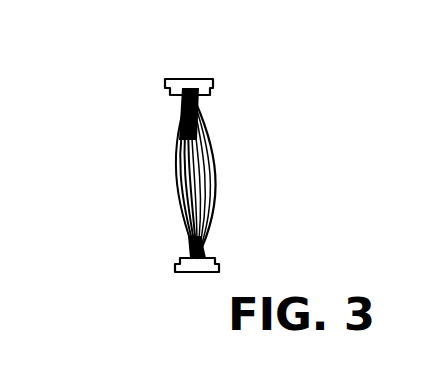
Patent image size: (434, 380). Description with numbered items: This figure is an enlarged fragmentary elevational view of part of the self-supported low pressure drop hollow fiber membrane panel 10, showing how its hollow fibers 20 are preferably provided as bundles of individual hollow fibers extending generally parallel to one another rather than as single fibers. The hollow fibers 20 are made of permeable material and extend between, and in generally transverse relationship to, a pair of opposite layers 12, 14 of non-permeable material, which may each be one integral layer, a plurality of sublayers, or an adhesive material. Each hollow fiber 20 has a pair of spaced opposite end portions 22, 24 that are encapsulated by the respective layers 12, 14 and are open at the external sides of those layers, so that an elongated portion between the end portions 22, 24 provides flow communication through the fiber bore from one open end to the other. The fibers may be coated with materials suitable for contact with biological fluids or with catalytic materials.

The hollow fiber membrane panel 10 is at (140, 177).
The layer of non-permeable material 12 is at (215, 82).
The layer of non-permeable material 14 is at (176, 268).
The hollow fibers 20 is at (215, 172).
The end portion of hollow fiber 22 is at (195, 86).
The end portion of hollow fiber 24 is at (199, 272).